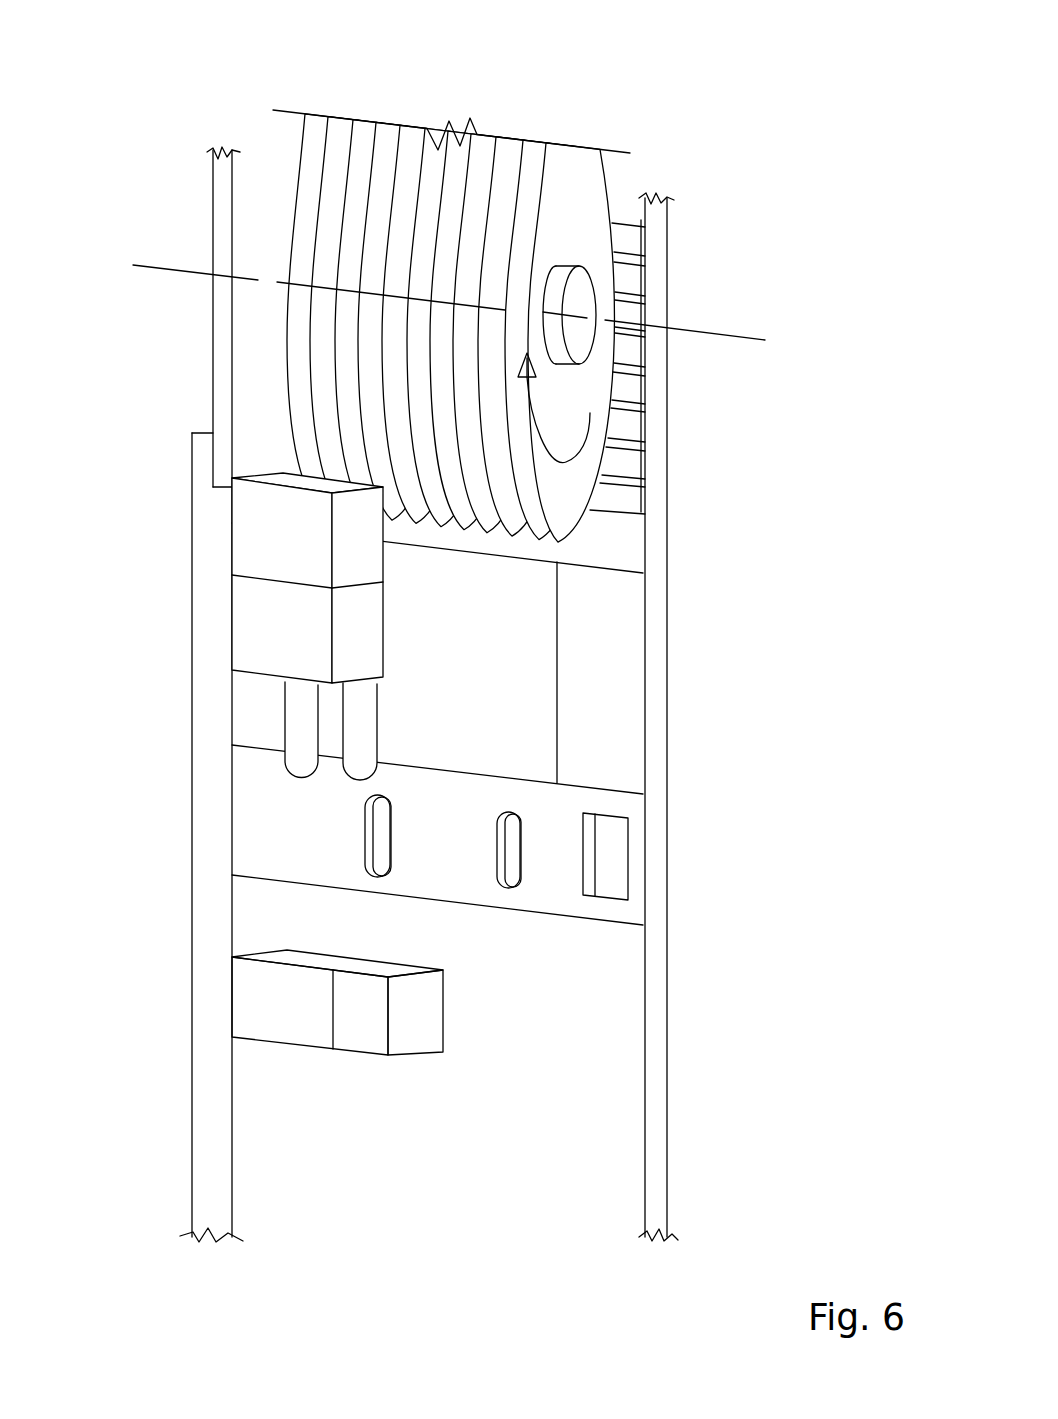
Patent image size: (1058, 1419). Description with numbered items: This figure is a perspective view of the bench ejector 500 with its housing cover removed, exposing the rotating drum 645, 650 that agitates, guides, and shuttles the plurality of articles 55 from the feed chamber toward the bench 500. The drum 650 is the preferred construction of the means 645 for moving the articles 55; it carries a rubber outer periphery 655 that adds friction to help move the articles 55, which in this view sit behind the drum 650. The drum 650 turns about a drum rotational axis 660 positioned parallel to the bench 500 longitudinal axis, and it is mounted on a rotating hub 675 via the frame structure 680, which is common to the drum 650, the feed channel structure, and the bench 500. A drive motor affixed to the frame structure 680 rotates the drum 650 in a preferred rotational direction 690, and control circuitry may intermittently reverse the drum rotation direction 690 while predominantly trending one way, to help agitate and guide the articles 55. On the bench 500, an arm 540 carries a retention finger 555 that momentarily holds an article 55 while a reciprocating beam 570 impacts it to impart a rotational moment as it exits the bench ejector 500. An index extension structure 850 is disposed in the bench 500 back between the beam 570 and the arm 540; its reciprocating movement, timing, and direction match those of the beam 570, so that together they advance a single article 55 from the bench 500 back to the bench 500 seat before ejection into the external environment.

The rubber outer periphery 655 is at (520, 300).
The drum rotational axis 660 is at (163, 263).
The means to agitate, guide, and shuttle the articles 645 is at (686, 342).
The rotating drum 650 is at (572, 197).
The article 55 is at (635, 242).
The rotating hub 675 is at (580, 293).
The rotational direction 690 is at (575, 450).
The bench ejector 500 is at (263, 840).
The arm 540 is at (714, 856).
The retention finger 555 is at (615, 857).
The reciprocating beam 570 is at (383, 848).
The index extension structure 850 is at (512, 877).
The frame structure 680 is at (660, 1053).